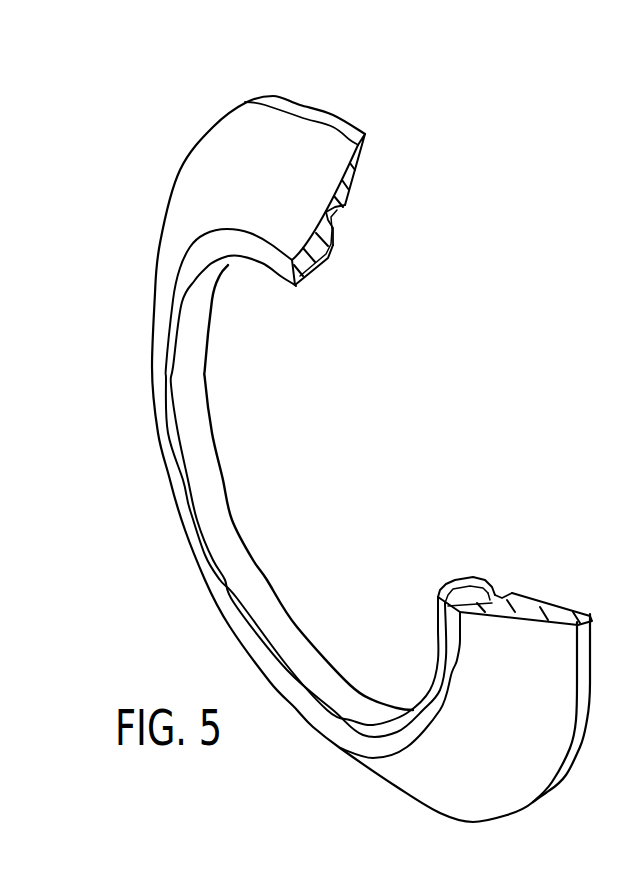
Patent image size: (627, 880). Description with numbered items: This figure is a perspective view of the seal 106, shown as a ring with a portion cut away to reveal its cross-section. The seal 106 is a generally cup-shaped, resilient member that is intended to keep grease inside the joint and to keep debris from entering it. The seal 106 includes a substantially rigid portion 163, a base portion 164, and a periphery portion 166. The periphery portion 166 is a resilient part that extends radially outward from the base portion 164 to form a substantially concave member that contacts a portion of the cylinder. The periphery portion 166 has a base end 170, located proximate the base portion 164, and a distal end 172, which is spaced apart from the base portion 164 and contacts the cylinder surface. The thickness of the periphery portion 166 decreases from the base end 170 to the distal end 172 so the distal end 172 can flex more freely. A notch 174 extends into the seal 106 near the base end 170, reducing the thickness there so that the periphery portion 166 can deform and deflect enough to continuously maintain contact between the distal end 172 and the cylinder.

The seal 106 is at (247, 68).
The substantially rigid portion 163 is at (312, 272).
The base portion 164 is at (312, 244).
The periphery portion 166 is at (326, 189).
The base end 170 is at (333, 211).
The distal end 172 is at (365, 149).
The notch 174 is at (336, 234).